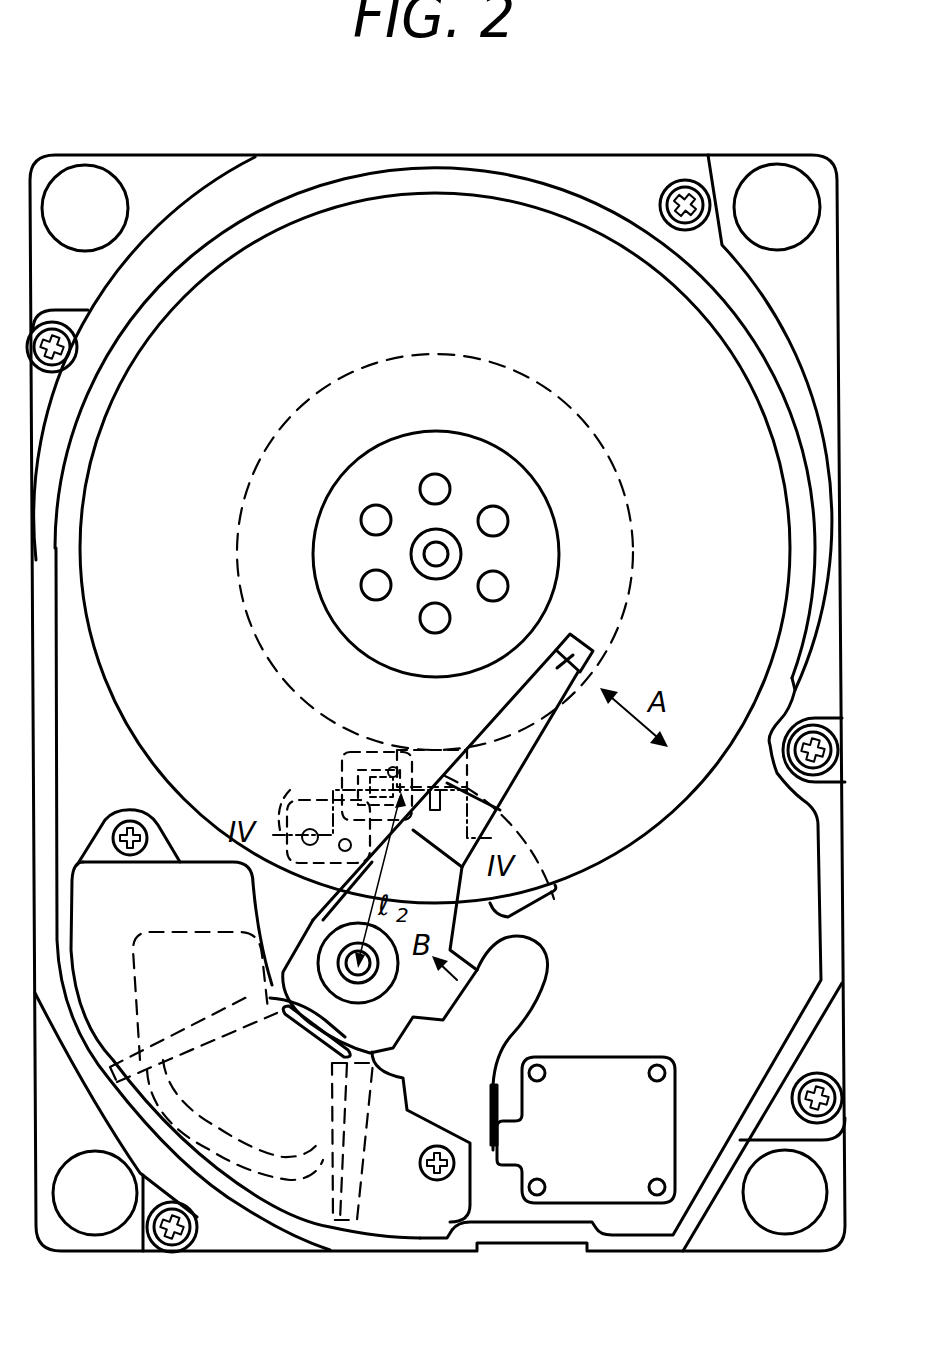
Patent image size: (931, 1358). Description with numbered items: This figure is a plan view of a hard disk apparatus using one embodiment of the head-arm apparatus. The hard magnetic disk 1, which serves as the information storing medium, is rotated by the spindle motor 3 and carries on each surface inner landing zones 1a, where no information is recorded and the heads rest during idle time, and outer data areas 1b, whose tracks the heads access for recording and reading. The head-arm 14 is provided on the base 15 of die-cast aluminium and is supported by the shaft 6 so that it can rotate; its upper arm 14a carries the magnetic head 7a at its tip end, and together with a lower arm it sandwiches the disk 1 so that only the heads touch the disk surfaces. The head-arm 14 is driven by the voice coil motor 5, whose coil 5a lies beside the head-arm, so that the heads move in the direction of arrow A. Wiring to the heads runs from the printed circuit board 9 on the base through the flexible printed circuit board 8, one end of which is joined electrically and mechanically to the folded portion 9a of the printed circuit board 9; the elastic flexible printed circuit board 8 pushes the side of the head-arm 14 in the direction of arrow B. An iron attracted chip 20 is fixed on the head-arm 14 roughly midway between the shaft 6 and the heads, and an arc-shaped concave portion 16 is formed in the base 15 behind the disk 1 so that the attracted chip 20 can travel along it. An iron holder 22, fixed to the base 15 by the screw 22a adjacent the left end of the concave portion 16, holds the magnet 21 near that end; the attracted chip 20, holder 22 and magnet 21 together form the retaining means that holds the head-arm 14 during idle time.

The hard magnetic disk 1 is at (708, 796).
The landing zones 1a is at (622, 542).
The data areas 1b is at (783, 542).
The spindle motor 3 is at (378, 468).
The voice coil motor 5 is at (240, 1185).
The coil 5a is at (307, 1193).
The shaft 6 is at (373, 973).
The magnetic head 7a is at (582, 648).
The flexible printed circuit board 8 is at (548, 968).
The printed circuit board 9 is at (613, 1060).
The folded portion 9a is at (497, 1165).
The head-arm 14 is at (303, 915).
The upper arm 14a is at (530, 757).
The base 15 is at (640, 1222).
The concave portion 16 is at (563, 913).
The attracted chip 20 is at (443, 747).
The magnet 21 is at (377, 740).
The holder 22 is at (323, 790).
The screw 22a is at (300, 813).